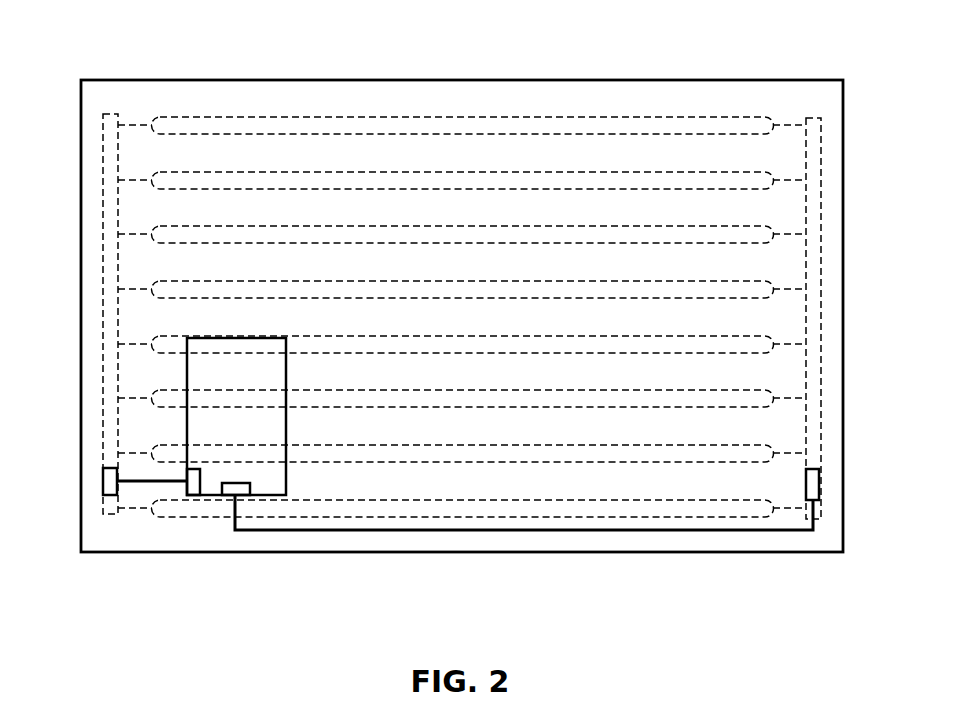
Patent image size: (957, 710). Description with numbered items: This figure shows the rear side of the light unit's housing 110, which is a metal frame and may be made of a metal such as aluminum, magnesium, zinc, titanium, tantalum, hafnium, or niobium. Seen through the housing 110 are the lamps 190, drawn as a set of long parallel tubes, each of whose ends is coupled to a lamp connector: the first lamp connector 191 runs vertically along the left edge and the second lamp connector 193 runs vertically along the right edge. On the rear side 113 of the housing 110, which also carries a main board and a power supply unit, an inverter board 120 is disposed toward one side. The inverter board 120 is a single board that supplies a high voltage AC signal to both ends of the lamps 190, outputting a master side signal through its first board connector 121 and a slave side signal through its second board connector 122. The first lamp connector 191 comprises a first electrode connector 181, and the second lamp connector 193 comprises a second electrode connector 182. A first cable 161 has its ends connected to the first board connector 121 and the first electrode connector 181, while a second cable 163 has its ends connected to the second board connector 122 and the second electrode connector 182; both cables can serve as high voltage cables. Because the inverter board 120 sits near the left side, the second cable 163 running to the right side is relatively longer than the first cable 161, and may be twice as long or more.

The housing 110 is at (110, 88).
The rear side 113 is at (508, 485).
The inverter board 120 is at (212, 481).
The first board connector 121 is at (194, 488).
The second board connector 122 is at (239, 492).
The first cable 161 is at (142, 481).
The second cable 163 is at (611, 532).
The first electrode connector 181 is at (103, 486).
The second electrode connector 182 is at (813, 482).
The lamps 190 is at (397, 107).
The first lamp connector 191 is at (110, 377).
The second lamp connector 193 is at (822, 363).